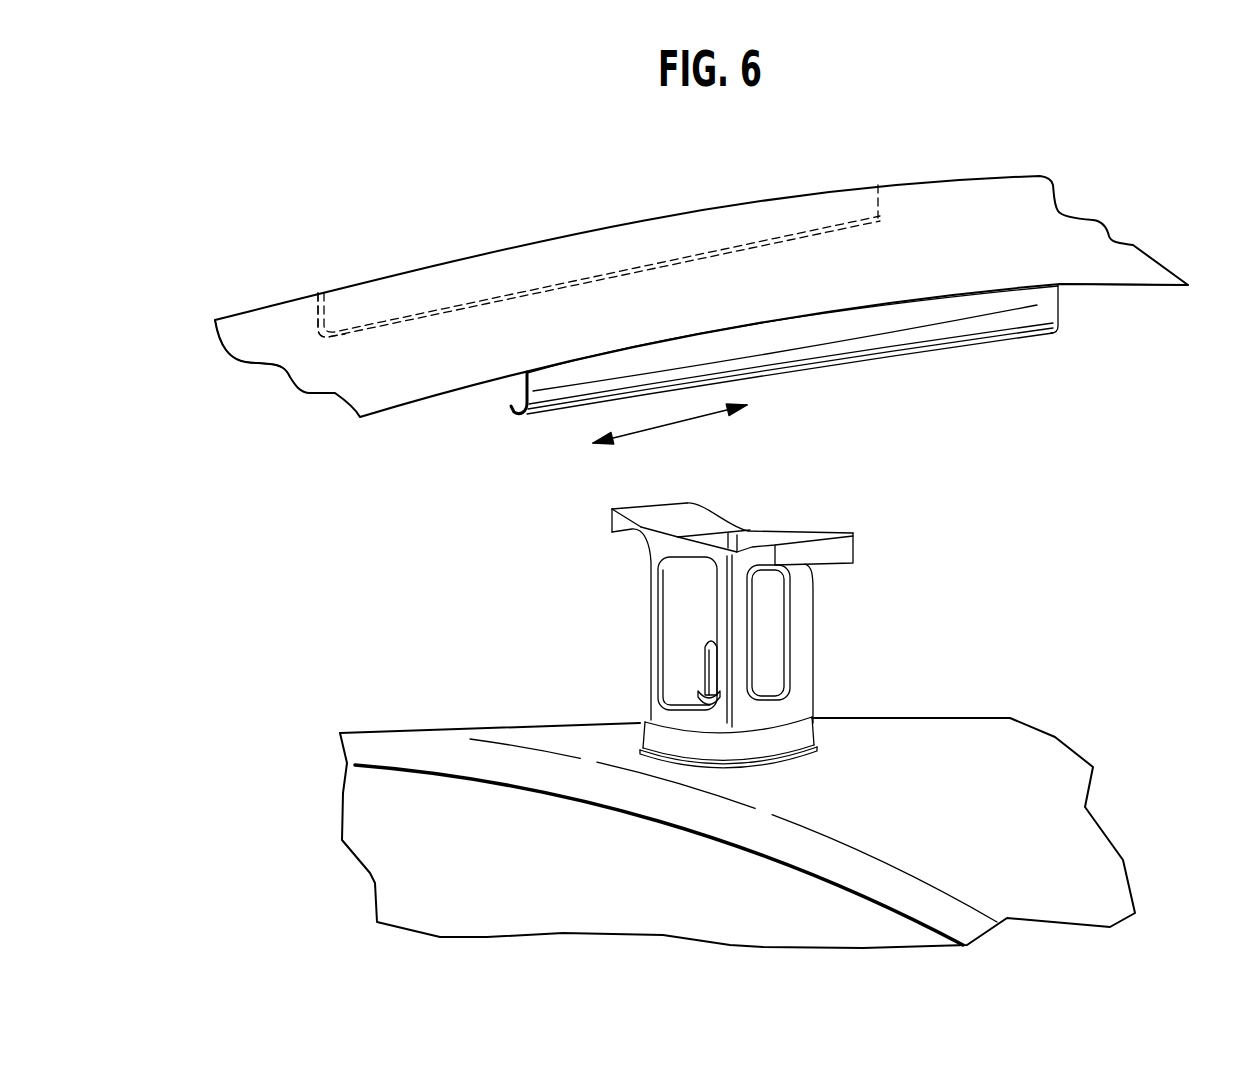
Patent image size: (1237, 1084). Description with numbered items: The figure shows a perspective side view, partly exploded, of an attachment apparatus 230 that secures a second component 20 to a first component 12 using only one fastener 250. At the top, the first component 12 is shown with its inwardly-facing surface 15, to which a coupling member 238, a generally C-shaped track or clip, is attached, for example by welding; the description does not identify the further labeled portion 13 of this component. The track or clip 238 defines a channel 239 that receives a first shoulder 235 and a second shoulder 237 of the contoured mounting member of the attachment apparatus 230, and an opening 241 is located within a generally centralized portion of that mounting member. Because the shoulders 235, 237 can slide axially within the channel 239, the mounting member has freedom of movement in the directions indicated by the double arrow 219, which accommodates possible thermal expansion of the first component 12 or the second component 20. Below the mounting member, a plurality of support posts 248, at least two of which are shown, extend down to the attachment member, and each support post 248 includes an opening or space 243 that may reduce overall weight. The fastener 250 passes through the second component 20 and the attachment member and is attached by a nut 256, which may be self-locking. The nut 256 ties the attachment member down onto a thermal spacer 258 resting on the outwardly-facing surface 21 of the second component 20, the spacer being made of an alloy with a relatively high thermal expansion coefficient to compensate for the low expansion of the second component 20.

The first component 12 is at (935, 198).
The panel edge flange 13 is at (1090, 270).
The inwardly-facing surface 15 is at (350, 368).
The second component 20 is at (1068, 863).
The outwardly-facing surface 21 is at (1002, 860).
The double arrow 219 is at (677, 422).
The attachment apparatus 230 is at (689, 621).
The first shoulder 235 is at (680, 517).
The second shoulder 237 is at (830, 548).
The coupling member 238 is at (411, 287).
The channel 239 is at (313, 320).
The opening 241 is at (732, 540).
The opening or space 243 is at (767, 605).
The support posts 248 is at (803, 657).
The fastener 250 is at (707, 652).
The nut 256 is at (697, 690).
The thermal spacer 258 is at (790, 740).